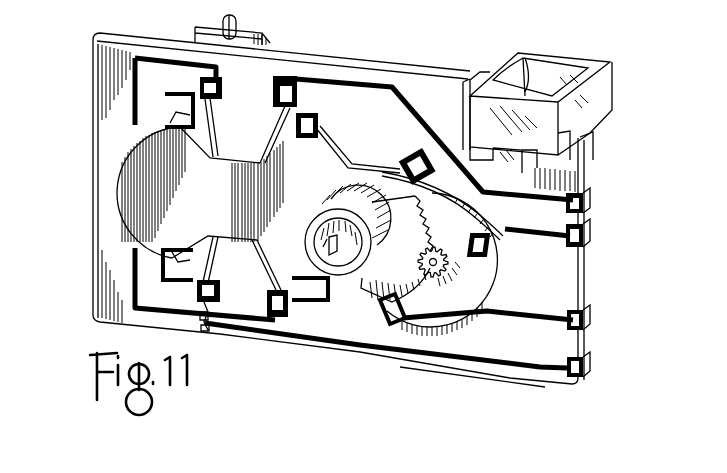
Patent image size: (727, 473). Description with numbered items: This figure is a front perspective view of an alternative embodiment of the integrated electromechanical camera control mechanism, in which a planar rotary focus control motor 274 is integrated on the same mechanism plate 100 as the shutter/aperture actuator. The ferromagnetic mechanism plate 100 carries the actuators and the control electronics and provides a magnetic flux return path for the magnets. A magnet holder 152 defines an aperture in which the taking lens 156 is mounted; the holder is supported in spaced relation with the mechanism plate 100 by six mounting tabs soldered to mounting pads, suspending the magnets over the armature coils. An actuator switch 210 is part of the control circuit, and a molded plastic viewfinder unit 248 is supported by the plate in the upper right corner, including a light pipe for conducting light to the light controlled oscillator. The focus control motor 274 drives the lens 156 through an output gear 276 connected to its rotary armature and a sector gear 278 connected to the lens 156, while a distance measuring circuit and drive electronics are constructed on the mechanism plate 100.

The mechanism plate 100 is at (573, 281).
The magnet holder 152 is at (127, 167).
The taking lens 156 is at (362, 174).
The actuator switch 210 is at (258, 33).
The viewfinder unit 248 is at (553, 62).
The planar rotary focus control motor 274 is at (470, 330).
The output gear 276 is at (433, 272).
The sector gear 278 is at (354, 298).